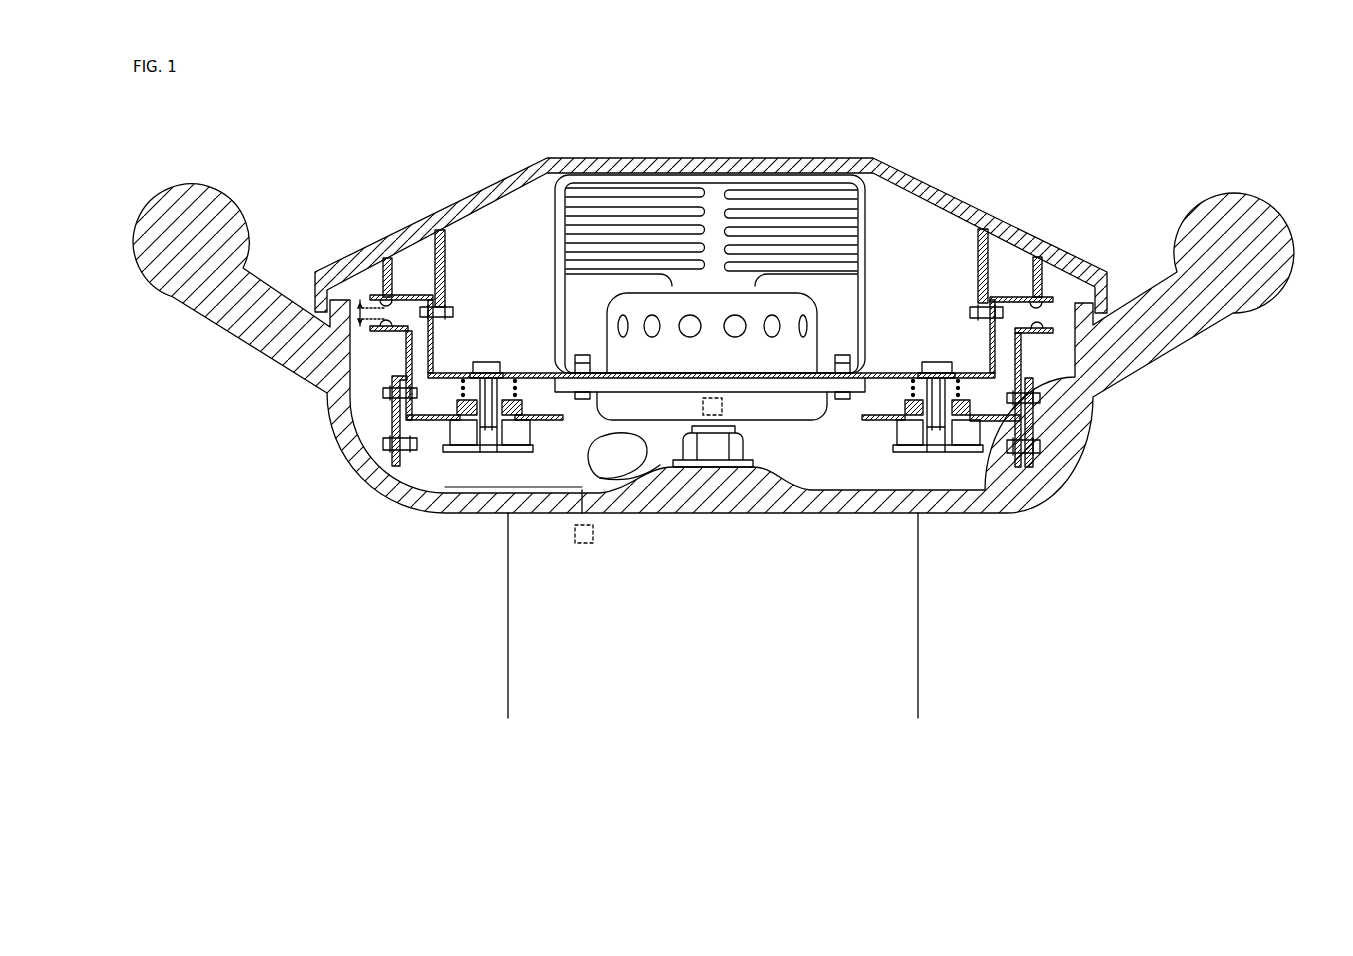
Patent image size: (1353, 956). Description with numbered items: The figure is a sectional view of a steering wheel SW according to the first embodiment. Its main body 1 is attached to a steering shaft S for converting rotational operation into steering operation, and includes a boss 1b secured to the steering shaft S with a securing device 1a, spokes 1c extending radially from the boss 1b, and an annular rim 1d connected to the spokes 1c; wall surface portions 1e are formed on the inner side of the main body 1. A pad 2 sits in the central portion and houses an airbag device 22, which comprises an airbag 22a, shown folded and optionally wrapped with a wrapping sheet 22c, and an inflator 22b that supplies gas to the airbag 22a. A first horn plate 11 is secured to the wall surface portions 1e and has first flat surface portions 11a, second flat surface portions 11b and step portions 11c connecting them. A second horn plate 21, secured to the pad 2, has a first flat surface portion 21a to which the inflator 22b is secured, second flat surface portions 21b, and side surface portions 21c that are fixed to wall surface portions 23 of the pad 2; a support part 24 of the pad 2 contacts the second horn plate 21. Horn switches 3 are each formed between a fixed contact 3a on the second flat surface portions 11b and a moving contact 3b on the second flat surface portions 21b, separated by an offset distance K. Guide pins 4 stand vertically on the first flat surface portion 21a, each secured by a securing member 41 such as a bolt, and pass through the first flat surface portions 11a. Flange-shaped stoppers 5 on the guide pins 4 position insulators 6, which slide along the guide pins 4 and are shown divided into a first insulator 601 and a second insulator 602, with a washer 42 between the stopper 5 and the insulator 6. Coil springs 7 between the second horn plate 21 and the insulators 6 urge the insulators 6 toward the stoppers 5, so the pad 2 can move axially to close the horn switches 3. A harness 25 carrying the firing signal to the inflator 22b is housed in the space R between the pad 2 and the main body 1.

The main body 1 is at (343, 540).
The securing device 1a is at (745, 442).
The boss 1b is at (952, 514).
The spokes 1c is at (240, 344).
The annular rim 1d is at (193, 190).
The wall surface portions 1e is at (1035, 430).
The pad 2 is at (955, 178).
The horn switches 3 is at (1055, 250).
The fixed contact 3a is at (1045, 333).
The moving contact 3b is at (1014, 294).
The guide pins 4 is at (487, 452).
The stoppers 5 is at (466, 452).
The insulators 6 is at (503, 437).
The coil springs 7 is at (461, 391).
The first horn plate 11 is at (719, 397).
The first flat surface portions 11a is at (432, 438).
The second flat surface portions 11b is at (384, 334).
The step portions 11c is at (1022, 380).
The second horn plate 21 is at (686, 317).
The first flat surface portion 21a is at (870, 371).
The second flat surface portions 21b is at (408, 293).
The side surface portions 21c is at (435, 334).
The airbag device 22 is at (688, 267).
The airbag 22a is at (643, 194).
The inflator 22b is at (716, 300).
The wrapping sheet 22c is at (872, 226).
The wall surface portions 23 is at (448, 253).
The support part 24 is at (378, 287).
The harness 25 is at (642, 448).
The securing member 41 is at (938, 362).
The washer 42 is at (947, 452).
The first insulator 601 is at (912, 453).
The second insulator 602 is at (906, 410).
The offset distance K is at (370, 331).
The space R is at (815, 459).
The steering shaft S is at (508, 646).
The steering wheel SW is at (378, 136).